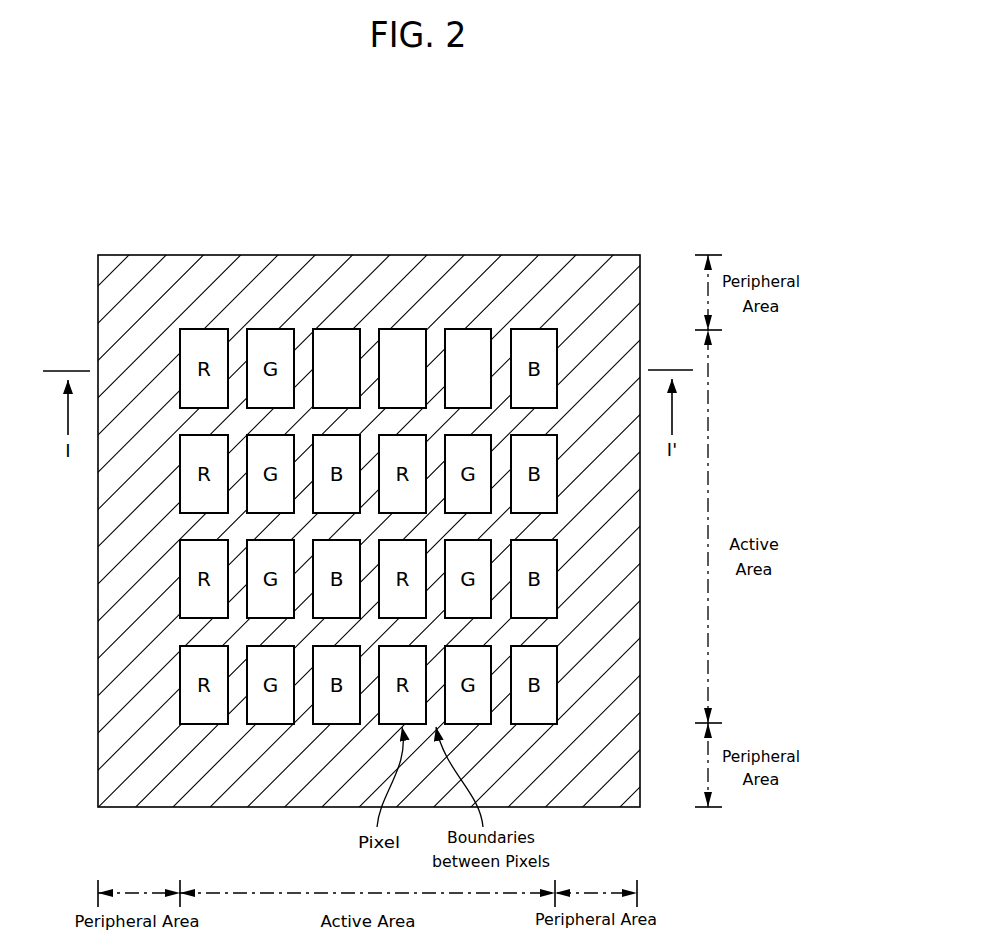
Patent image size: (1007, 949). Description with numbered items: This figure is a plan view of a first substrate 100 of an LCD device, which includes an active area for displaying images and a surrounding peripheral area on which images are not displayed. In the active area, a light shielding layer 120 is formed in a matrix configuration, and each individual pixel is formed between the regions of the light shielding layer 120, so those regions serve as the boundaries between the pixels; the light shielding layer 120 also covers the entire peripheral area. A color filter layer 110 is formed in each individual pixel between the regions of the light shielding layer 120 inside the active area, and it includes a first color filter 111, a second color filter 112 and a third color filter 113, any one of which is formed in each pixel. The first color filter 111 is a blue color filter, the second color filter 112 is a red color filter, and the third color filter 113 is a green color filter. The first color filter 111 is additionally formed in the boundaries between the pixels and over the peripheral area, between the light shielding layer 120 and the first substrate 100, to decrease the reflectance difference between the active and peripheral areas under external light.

The first substrate 100 is at (593, 255).
The color filter layer 110 is at (402, 286).
The first color filter 111 is at (318, 330).
The second color filter 112 is at (417, 340).
The third color filter 113 is at (465, 340).
The light shielding layer 120 is at (521, 272).